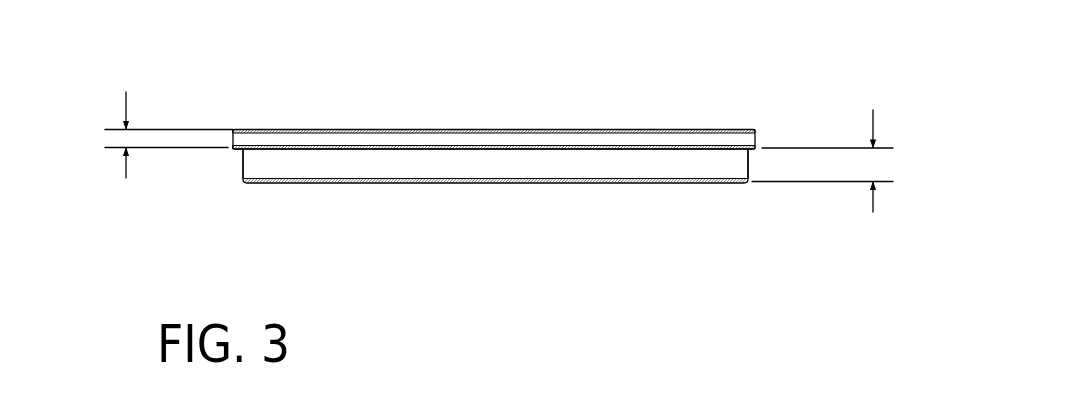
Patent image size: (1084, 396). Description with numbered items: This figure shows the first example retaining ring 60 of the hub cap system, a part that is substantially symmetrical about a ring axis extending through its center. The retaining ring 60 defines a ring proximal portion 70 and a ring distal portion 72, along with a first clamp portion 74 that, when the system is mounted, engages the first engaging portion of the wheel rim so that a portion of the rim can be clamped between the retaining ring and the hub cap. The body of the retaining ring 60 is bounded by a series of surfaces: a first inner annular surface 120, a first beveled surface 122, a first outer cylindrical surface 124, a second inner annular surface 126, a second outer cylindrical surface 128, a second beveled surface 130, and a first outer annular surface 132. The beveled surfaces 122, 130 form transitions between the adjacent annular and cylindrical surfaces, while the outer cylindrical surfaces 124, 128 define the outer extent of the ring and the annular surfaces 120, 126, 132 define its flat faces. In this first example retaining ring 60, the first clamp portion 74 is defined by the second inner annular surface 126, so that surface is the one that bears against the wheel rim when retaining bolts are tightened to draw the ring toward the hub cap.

The retaining ring 60 is at (770, 97).
The ring proximal portion 70 is at (873, 212).
The ring distal portion 72 is at (126, 178).
The first clamp portion 74 is at (240, 148).
The first inner annular surface 120 is at (495, 184).
The first beveled surface 122 is at (588, 184).
The first outer cylindrical surface 124 is at (660, 168).
The second inner annular surface 126 is at (750, 150).
The second outer cylindrical surface 128 is at (518, 141).
The second beveled surface 130 is at (482, 129).
The first outer annular surface 132 is at (377, 129).